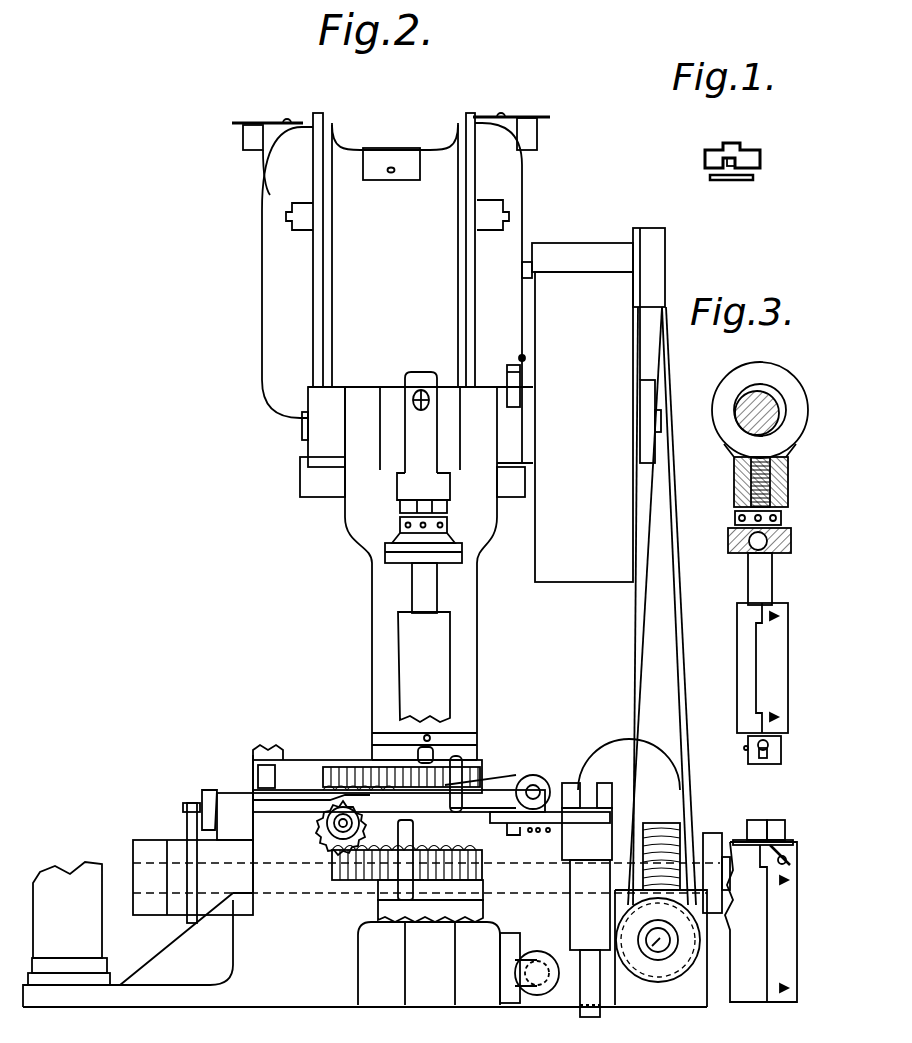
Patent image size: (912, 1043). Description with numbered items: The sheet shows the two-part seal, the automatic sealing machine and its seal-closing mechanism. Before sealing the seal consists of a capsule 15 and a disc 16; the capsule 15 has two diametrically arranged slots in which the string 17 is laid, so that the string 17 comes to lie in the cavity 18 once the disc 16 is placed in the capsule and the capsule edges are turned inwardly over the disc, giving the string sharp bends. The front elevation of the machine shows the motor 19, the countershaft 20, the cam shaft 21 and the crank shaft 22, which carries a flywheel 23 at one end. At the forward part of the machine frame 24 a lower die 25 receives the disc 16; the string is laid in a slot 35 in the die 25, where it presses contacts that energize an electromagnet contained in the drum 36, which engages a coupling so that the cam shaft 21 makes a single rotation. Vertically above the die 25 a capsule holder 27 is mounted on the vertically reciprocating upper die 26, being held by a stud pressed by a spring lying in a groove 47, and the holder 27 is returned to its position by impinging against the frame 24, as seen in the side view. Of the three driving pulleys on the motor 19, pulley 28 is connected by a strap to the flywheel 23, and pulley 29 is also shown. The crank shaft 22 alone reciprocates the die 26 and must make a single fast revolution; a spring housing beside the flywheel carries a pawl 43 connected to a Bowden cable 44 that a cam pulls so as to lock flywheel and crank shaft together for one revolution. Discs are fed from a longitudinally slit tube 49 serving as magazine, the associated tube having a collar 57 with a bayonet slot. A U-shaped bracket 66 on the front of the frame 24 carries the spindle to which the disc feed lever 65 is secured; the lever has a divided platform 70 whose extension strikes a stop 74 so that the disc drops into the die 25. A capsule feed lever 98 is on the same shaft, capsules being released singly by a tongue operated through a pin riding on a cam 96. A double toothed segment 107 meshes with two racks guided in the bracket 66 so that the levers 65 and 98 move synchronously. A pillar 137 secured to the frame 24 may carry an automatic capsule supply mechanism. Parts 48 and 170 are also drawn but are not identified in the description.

In FIG. 1, the capsule 15 is at (762, 160).
In FIG. 1, the disc 16 is at (716, 178).
In FIG. 1, the string 17 is at (740, 166).
In FIG. 1, the cavity 18 is at (730, 143).
In FIG. 2, the motor 19 is at (350, 150).
In FIG. 2, the countershaft 20 is at (655, 950).
In FIG. 2, the cam shaft 21 is at (128, 880).
In FIG. 2, the crank shaft 22 is at (302, 430).
In FIG. 3, the crank shaft 22 is at (762, 398).
In FIG. 2, the flywheel 23 is at (584, 427).
In FIG. 2, the machine frame 24 is at (463, 657).
In FIG. 3, the machine frame 24 is at (740, 650).
In FIG. 2, the lower die 25 is at (775, 835).
In FIG. 2, the upper die 26 is at (418, 597).
In FIG. 3, the upper die 26 is at (770, 575).
In FIG. 3, the capsule holder 27 is at (783, 752).
In FIG. 2, the driving pulley 28 is at (578, 243).
In FIG. 2, the driving pulley 29 is at (667, 252).
In FIG. 2, the slot 35 is at (765, 820).
In FIG. 2, the drum 36 is at (605, 748).
In FIG. 2, the pawl 43 is at (510, 368).
In FIG. 2, the Bowden cable 44 is at (520, 358).
In FIG. 2, the groove 47 is at (463, 770).
In FIG. 2, the bracket 48 is at (518, 470).
In FIG. 2, the longitudinally slit tube 49 is at (580, 1000).
In FIG. 2, the collar 57 is at (578, 895).
In FIG. 2, the lever 65 is at (485, 818).
In FIG. 2, the U-shaped bracket 66 is at (473, 902).
In FIG. 2, the platform 70 is at (567, 825).
In FIG. 2, the stop 74 is at (407, 882).
In FIG. 2, the cam 96 is at (190, 835).
In FIG. 2, the capsule feed lever 98 is at (283, 813).
In FIG. 2, the double toothed segment 107 is at (327, 830).
In FIG. 2, the pillar 137 is at (69, 923).
In FIG. 2, the guide bracket 170 is at (250, 747).